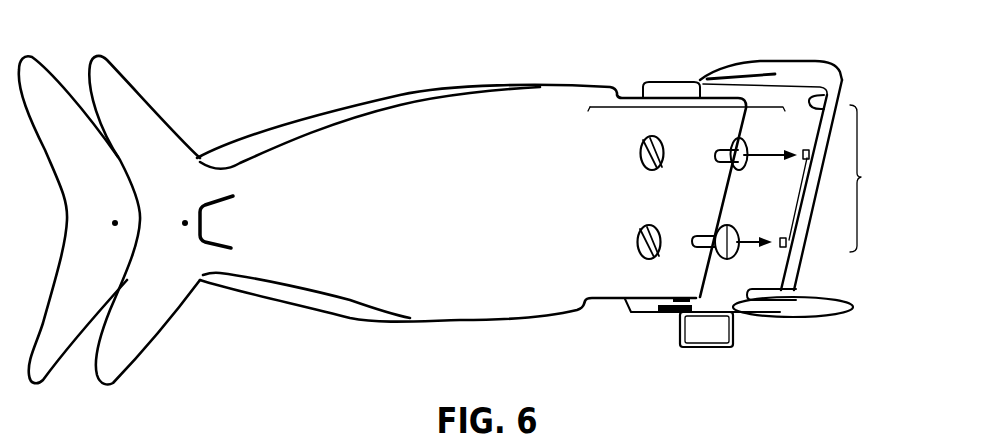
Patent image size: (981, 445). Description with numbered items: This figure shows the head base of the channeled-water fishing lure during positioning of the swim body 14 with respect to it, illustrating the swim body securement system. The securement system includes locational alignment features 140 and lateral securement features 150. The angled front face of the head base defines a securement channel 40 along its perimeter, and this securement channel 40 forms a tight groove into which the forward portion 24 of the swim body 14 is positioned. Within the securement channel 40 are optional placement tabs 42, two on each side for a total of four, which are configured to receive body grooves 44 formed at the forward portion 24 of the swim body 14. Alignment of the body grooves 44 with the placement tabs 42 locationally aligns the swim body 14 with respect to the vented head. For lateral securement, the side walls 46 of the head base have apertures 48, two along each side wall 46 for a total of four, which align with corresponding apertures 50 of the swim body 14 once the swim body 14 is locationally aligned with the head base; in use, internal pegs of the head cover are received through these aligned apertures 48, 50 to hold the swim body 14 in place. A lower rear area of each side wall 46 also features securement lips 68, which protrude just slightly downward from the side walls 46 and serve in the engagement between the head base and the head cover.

The swim body 14 is at (386, 211).
The forward portion 24 is at (669, 199).
The securement channel 40 is at (843, 78).
The placement tabs 42 is at (806, 162).
The body grooves 44 is at (718, 163).
The side walls 46 is at (754, 216).
The apertures 48 is at (703, 237).
The apertures 50 is at (640, 153).
The securement lips 68 is at (637, 312).
The locational alignment features 140 is at (862, 177).
The lateral securement features 150 is at (687, 108).